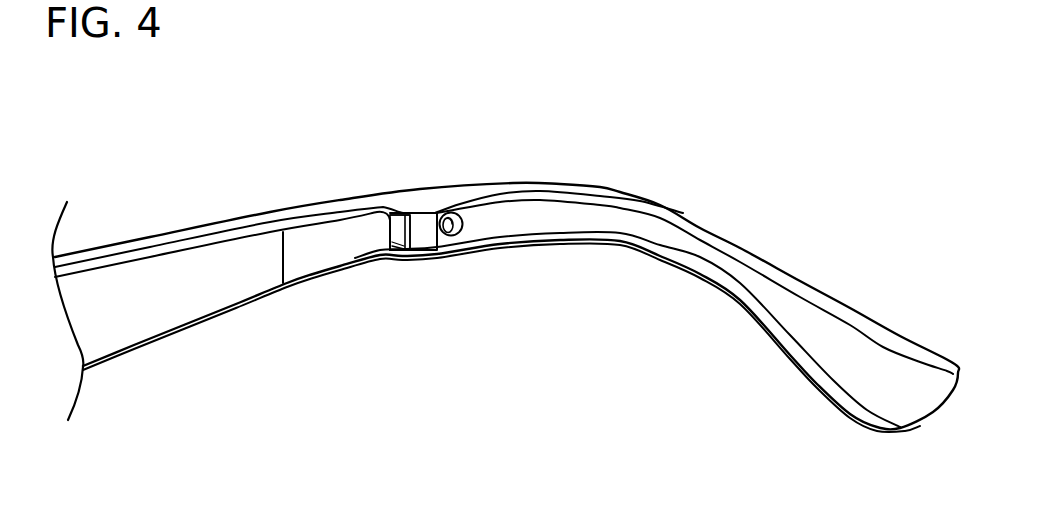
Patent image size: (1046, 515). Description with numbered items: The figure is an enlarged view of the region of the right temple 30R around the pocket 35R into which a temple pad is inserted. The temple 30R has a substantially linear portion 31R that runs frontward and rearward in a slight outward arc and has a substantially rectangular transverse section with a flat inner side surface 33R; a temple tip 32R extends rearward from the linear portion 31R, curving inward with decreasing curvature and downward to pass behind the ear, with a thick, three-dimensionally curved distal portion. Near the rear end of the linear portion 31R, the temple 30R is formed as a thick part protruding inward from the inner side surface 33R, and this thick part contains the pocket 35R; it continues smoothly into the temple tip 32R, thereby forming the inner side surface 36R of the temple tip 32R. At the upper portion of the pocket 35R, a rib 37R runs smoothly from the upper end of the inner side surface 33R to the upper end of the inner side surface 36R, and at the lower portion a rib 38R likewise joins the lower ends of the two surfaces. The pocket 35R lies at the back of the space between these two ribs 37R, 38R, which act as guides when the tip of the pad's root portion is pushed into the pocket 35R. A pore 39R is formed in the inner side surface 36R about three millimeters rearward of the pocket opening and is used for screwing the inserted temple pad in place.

The temple 30R is at (588, 122).
The substantially linear portion 31R is at (115, 322).
The temple tip 32R is at (665, 237).
The inner side surface 33R is at (177, 295).
The pocket 35R is at (397, 232).
The inner side surface of the temple tip 36R is at (527, 213).
The rib 37R is at (393, 210).
The rib 38R is at (393, 250).
The pore 39R is at (458, 233).